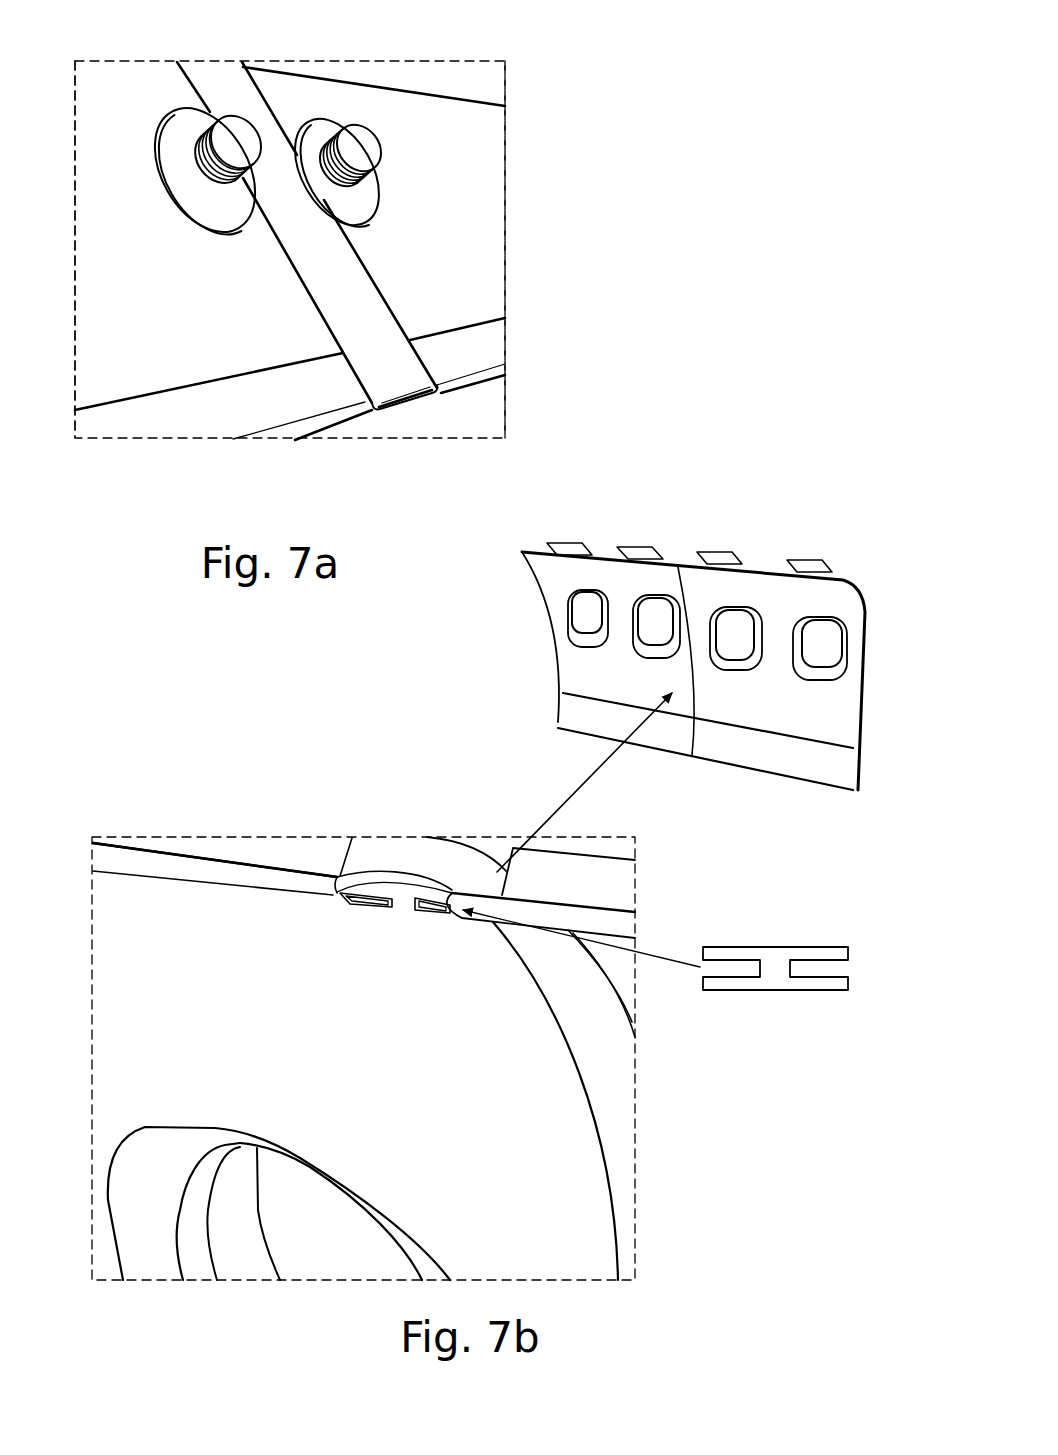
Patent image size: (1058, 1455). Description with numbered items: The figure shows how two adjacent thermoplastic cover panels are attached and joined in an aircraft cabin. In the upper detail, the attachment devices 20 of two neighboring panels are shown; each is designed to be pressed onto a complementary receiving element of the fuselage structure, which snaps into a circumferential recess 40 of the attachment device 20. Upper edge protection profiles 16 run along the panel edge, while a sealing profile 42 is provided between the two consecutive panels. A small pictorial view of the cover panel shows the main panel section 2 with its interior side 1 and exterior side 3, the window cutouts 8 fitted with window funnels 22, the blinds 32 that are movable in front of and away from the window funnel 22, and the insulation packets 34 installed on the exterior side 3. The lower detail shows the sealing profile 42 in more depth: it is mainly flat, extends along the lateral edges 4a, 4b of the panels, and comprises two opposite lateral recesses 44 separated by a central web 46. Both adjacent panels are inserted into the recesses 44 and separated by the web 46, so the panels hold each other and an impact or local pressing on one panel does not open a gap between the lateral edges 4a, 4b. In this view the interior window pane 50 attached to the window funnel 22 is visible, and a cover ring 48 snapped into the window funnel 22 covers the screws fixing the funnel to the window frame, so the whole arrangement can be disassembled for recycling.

In FIG. 7B, the interior side 1 is at (588, 693).
In FIG. 7A, the main panel section 2 is at (494, 188).
In FIG. 7A, the exterior side 3 is at (487, 128).
In FIG. 7B, the lateral edge 4a is at (413, 914).
In FIG. 7B, the lateral edge 4b is at (378, 910).
In FIG. 7B, the window cutout 8 is at (582, 615).
In FIG. 7A, the upper edge protection profile 16 is at (222, 405).
In FIG. 7A, the attachment device 20 is at (240, 145).
In FIG. 7B, the window funnel 22 is at (592, 636).
In FIG. 7B, the blind 32 is at (565, 543).
In FIG. 7B, the insulation packet 34 is at (245, 850).
In FIG. 7A, the circumferential recess 40 is at (212, 118).
In FIG. 7A, the sealing profile 42 is at (398, 388).
In FIG. 7B, the sealing profile 42 is at (700, 685).
In FIG. 7B, the lateral recess 44 is at (375, 895).
In FIG. 7B, the central web 46 is at (400, 892).
In FIG. 7B, the cover ring 48 is at (213, 1160).
In FIG. 7B, the interior window pane 50 is at (330, 1225).